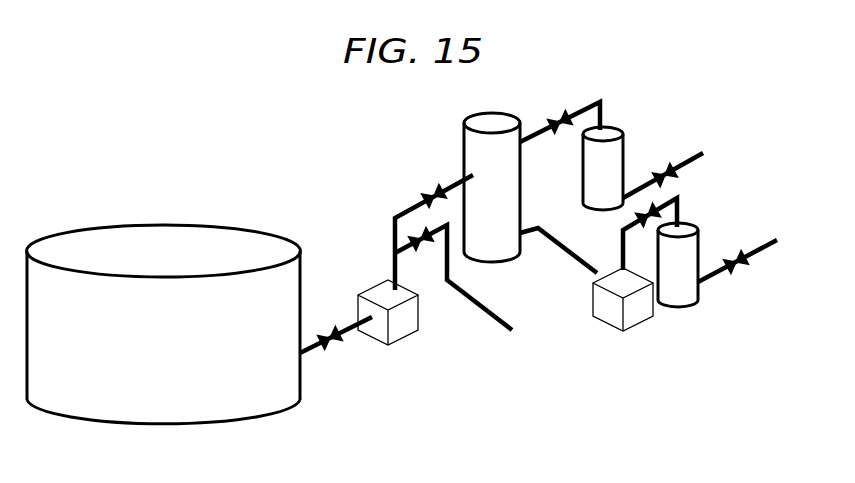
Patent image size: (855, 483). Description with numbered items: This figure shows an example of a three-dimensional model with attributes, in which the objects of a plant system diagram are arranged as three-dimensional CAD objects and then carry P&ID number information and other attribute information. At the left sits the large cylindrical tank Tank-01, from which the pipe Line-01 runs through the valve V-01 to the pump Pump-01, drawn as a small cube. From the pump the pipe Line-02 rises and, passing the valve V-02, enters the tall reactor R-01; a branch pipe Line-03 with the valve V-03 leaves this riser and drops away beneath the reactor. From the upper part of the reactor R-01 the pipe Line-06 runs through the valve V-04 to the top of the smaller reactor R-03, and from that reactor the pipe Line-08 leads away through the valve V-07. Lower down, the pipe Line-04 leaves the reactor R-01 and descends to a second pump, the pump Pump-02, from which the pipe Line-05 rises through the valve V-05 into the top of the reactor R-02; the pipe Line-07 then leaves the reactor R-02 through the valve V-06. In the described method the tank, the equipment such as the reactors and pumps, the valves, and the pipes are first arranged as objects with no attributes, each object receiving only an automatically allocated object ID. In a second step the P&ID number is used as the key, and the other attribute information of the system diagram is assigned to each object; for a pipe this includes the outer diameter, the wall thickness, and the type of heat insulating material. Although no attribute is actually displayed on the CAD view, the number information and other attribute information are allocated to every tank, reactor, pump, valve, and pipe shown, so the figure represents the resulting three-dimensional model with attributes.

The tank Tank-01 is at (164, 340).
The pipe Line-01 is at (351, 338).
The valve V-01 is at (327, 326).
The pump 01 Pump-01 is at (370, 308).
The pipe Line-02 is at (395, 232).
The valve V-02 is at (426, 190).
The pipe Line-03 is at (453, 277).
The valve V-03 is at (422, 248).
The reactor R-01 is at (492, 175).
The pipe Line-06 is at (569, 111).
The valve V-04 is at (552, 118).
The reactor R-03 is at (615, 156).
The line 08 Line-08 is at (671, 165).
The valve V-07 is at (661, 168).
The pipe Line-04 is at (559, 250).
The pump 02 Pump-02 is at (619, 305).
The pipe Line-05 is at (677, 234).
The valve V-05 is at (646, 230).
The reactor R-02 is at (703, 265).
The pipe Line-07 is at (746, 261).
The valve V-06 is at (734, 273).